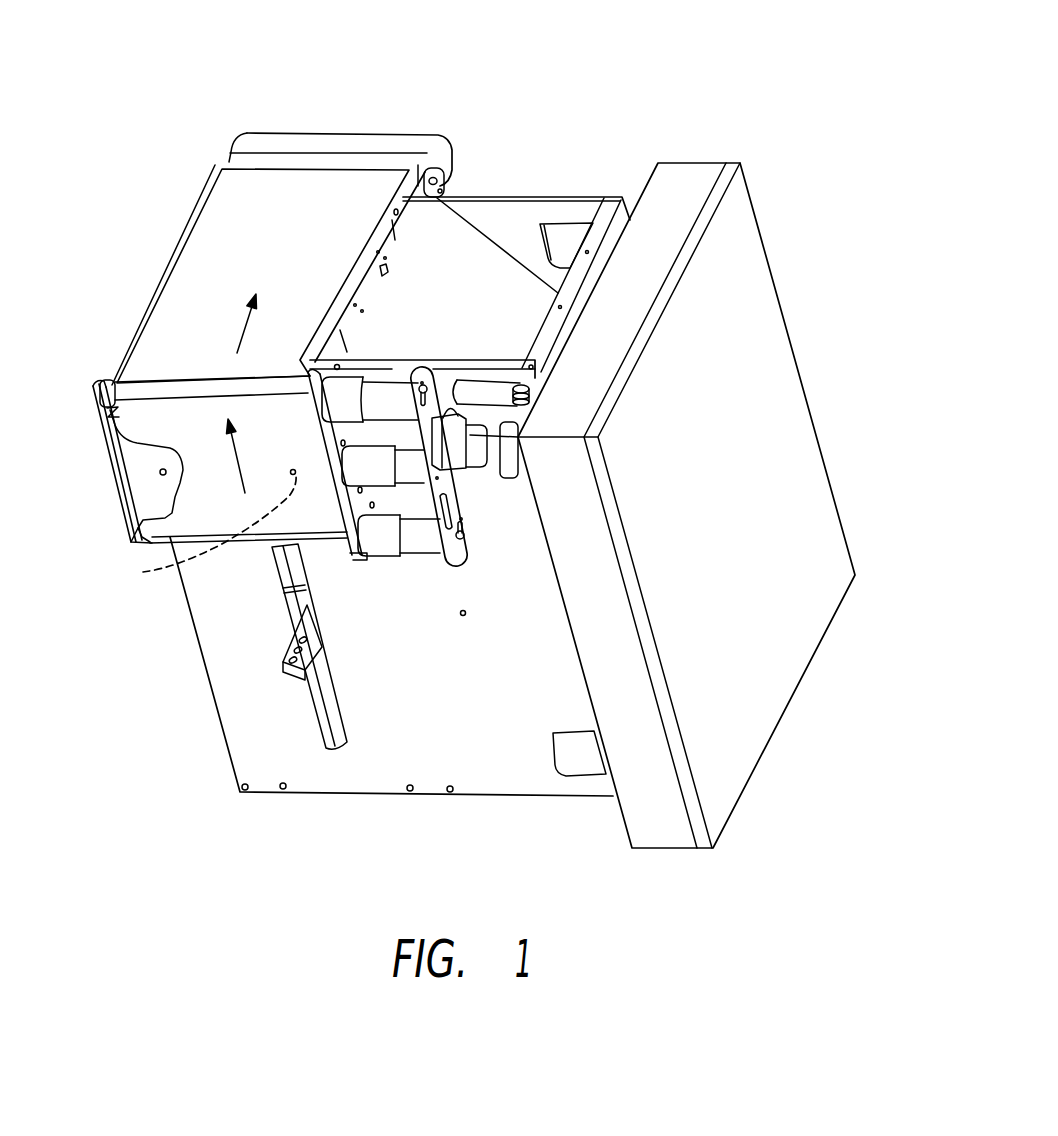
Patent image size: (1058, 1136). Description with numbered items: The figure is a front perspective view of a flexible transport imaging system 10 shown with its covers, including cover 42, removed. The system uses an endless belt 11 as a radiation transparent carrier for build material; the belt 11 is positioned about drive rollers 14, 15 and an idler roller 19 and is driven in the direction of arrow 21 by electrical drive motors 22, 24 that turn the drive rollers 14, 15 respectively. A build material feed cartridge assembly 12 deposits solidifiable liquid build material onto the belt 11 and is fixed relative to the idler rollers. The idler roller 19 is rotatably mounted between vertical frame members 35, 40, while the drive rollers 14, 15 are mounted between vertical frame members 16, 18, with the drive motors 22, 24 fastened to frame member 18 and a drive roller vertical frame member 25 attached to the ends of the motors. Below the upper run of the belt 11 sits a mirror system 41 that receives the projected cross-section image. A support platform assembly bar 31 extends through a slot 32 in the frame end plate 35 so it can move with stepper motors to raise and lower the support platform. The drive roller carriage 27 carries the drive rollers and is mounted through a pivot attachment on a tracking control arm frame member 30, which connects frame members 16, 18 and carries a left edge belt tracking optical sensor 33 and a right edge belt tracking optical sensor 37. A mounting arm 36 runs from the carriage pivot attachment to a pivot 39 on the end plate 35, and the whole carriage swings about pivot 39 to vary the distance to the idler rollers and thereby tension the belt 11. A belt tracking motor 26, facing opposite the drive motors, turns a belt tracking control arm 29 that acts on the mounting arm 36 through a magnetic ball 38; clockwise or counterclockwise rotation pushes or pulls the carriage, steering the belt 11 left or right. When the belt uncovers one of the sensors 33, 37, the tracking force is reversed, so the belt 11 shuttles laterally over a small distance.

The flexible transport imaging system 10 is at (720, 95).
The endless belt 11 is at (286, 286).
The build material feed cartridge assembly 12 is at (345, 133).
The drive roller 14 is at (112, 388).
The drive roller 15 is at (140, 532).
The vertical frame member 16 is at (118, 491).
The vertical frame member 18 is at (352, 560).
The idler roller 19 is at (422, 168).
The arrow 21 is at (240, 463).
The drive motor 22 is at (392, 381).
The drive motor 24 is at (417, 557).
The drive roller vertical frame member 25 is at (467, 532).
The belt tracking motor 26 is at (393, 482).
The drive roller carriage 27 is at (460, 583).
The belt tracking control arm 29 is at (460, 478).
The tracking control arm frame member 30 is at (123, 442).
The support platform assembly bar 31 is at (282, 667).
The slot 32 is at (330, 733).
The left edge belt tracking optical sensor 33 is at (160, 471).
The frame end plate 35 is at (452, 709).
The mounting arm 36 is at (460, 400).
The right edge belt tracking optical sensor 37 is at (204, 530).
The magnetic ball 38 is at (445, 416).
The pivot 39 is at (524, 386).
The vertical frame member 40 is at (532, 231).
The mirror system 41 is at (480, 304).
The cover 42 is at (845, 538).